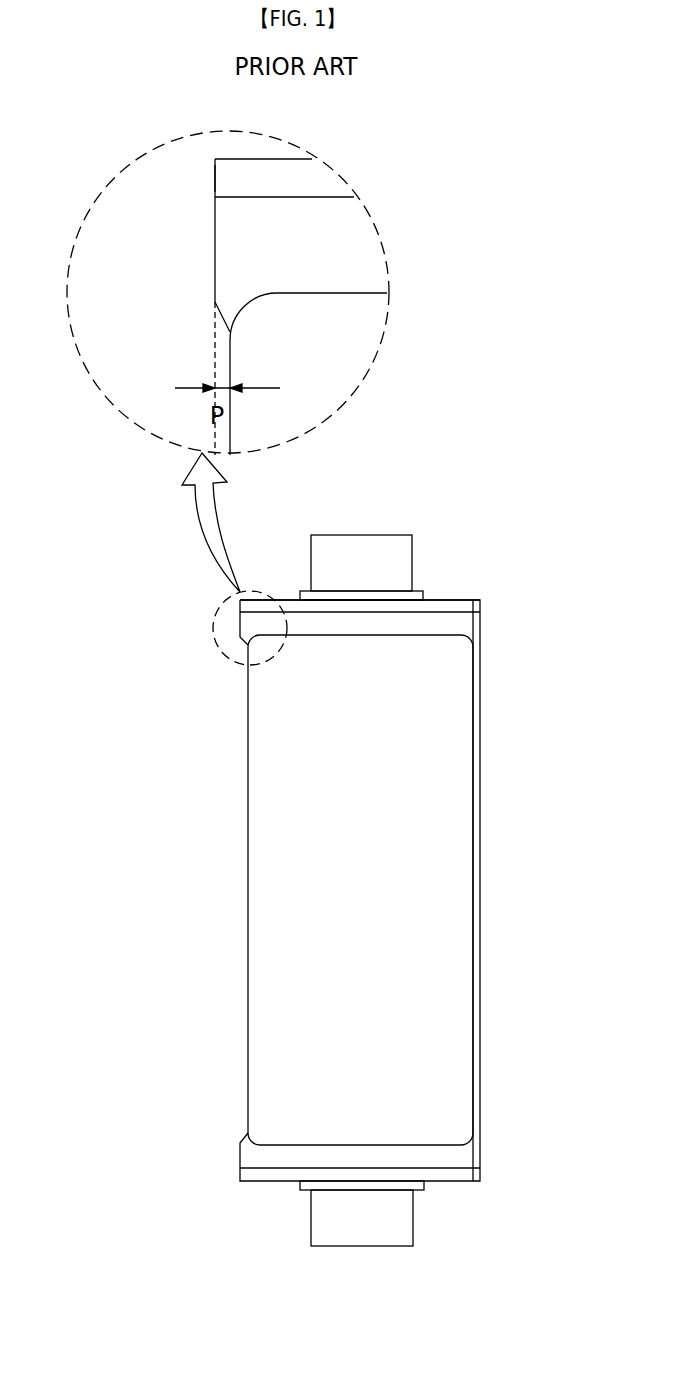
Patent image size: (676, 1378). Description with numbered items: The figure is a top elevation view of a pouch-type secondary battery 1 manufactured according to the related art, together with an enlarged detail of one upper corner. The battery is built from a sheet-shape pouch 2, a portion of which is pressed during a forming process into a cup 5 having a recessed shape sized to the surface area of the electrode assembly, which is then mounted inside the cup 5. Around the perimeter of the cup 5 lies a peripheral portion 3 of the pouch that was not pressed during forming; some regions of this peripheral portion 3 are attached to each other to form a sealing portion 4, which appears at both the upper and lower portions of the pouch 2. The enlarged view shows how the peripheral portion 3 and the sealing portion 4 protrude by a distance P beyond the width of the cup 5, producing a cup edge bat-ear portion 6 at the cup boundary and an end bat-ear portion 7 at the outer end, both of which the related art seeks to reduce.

The pouch-type secondary battery 1 is at (226, 900).
The pouch 2 is at (458, 882).
The peripheral portion 3 is at (453, 626).
The sealing portion 4 is at (436, 607).
The cup 5 is at (367, 348).
The cup edge bat-ear portion 6 is at (216, 302).
The end bat-ear portion 7 is at (222, 178).